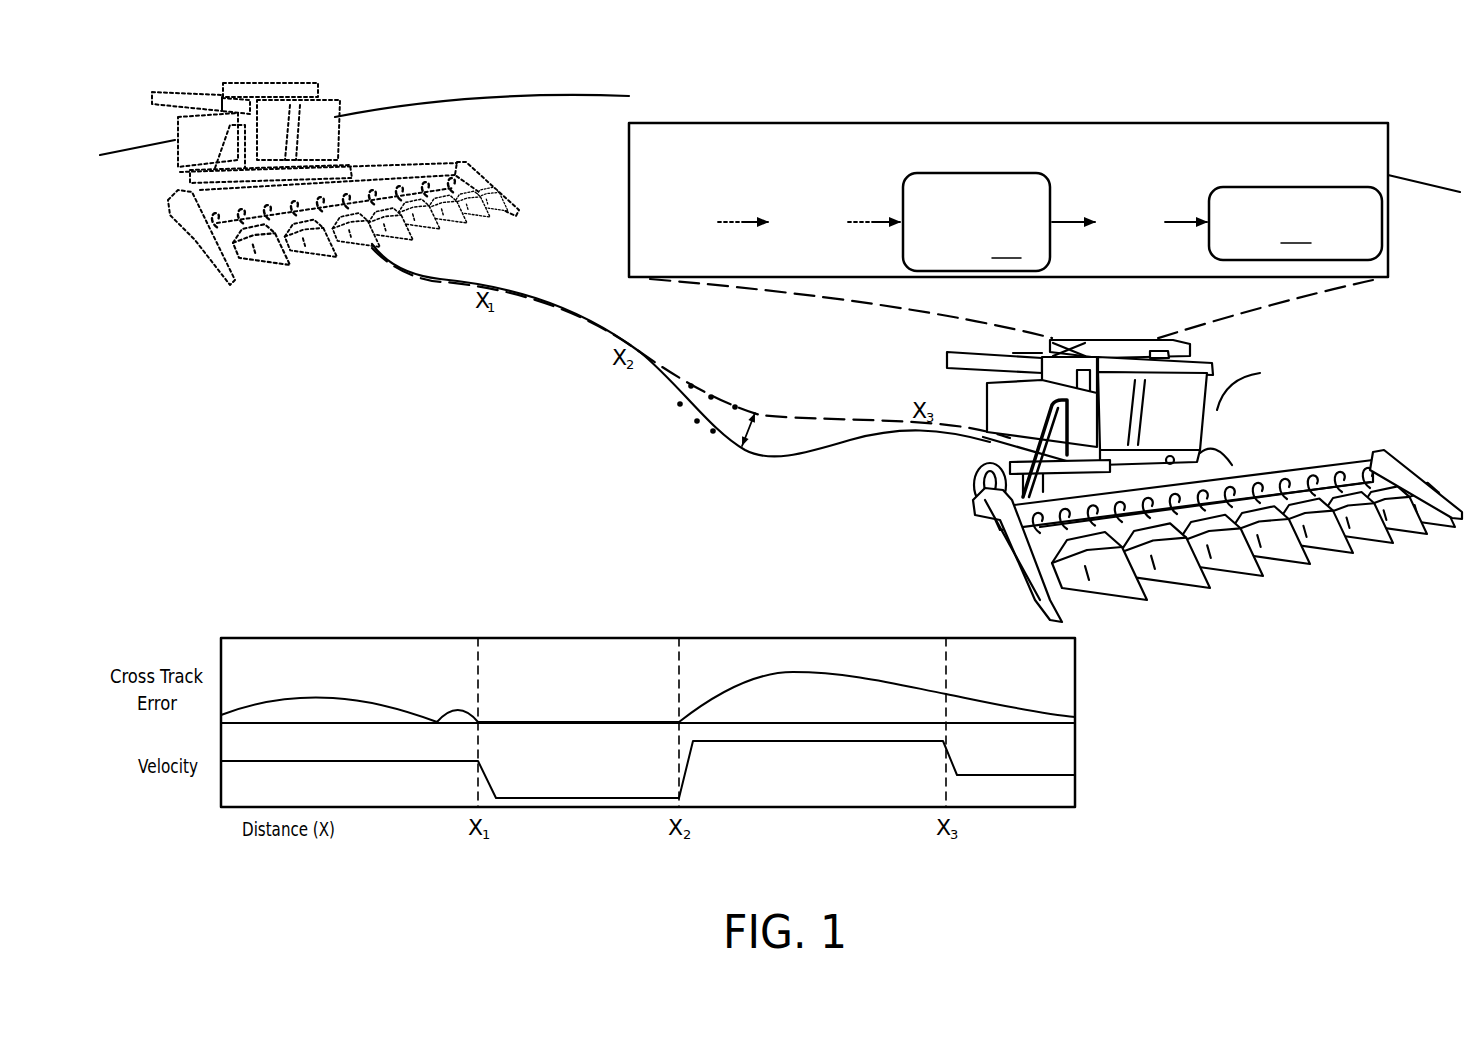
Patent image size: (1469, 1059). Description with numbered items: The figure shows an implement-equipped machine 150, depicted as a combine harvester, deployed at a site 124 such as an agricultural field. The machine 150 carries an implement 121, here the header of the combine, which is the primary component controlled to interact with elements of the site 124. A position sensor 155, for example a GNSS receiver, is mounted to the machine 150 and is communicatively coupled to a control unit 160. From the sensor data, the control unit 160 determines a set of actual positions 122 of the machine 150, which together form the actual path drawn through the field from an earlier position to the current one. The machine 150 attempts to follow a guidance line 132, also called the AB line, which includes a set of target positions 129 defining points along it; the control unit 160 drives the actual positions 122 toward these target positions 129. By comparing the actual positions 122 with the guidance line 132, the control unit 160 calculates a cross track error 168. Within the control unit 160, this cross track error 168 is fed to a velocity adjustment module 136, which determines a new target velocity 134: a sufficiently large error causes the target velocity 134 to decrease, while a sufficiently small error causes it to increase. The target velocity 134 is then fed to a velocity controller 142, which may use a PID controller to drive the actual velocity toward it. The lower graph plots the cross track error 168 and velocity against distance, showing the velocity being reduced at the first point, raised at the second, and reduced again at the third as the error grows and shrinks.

The implement 121 is at (1340, 473).
The actual positions 122 is at (644, 469).
The site 124 is at (400, 485).
The target positions 129 is at (735, 406).
The guidance line 132 is at (805, 418).
The target velocity 134 is at (565, 752).
The velocity adjustment module 136 is at (976, 222).
The velocity controller 142 is at (1295, 223).
The implement-equipped machine 150 is at (1215, 410).
The position sensor 155 is at (1182, 356).
The control unit 160 is at (1072, 155).
The cross track error 168 is at (392, 665).